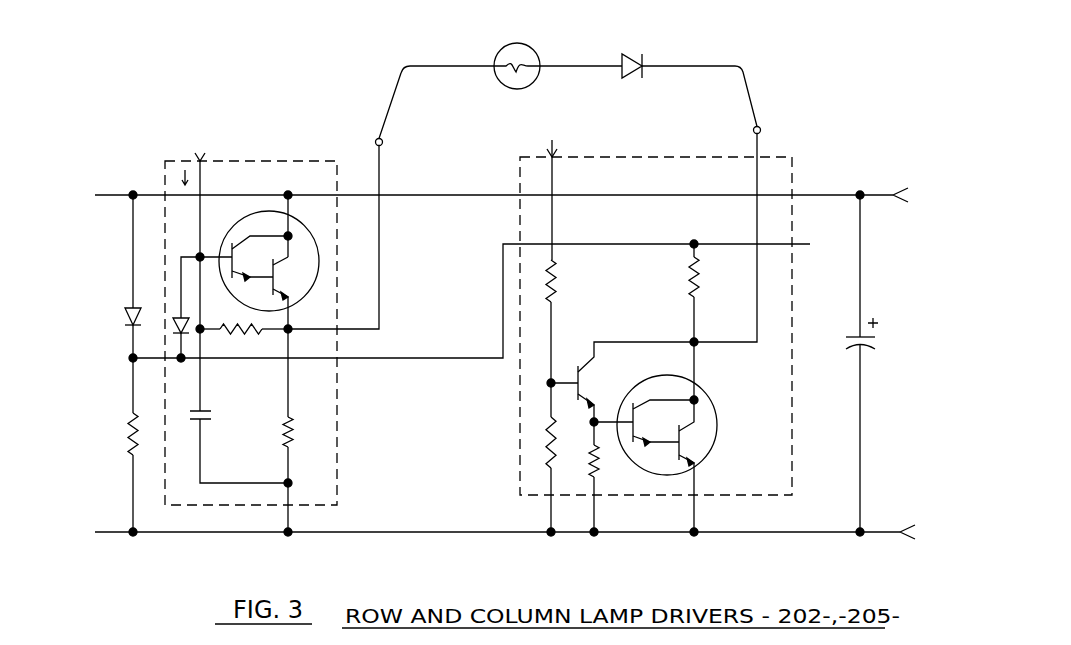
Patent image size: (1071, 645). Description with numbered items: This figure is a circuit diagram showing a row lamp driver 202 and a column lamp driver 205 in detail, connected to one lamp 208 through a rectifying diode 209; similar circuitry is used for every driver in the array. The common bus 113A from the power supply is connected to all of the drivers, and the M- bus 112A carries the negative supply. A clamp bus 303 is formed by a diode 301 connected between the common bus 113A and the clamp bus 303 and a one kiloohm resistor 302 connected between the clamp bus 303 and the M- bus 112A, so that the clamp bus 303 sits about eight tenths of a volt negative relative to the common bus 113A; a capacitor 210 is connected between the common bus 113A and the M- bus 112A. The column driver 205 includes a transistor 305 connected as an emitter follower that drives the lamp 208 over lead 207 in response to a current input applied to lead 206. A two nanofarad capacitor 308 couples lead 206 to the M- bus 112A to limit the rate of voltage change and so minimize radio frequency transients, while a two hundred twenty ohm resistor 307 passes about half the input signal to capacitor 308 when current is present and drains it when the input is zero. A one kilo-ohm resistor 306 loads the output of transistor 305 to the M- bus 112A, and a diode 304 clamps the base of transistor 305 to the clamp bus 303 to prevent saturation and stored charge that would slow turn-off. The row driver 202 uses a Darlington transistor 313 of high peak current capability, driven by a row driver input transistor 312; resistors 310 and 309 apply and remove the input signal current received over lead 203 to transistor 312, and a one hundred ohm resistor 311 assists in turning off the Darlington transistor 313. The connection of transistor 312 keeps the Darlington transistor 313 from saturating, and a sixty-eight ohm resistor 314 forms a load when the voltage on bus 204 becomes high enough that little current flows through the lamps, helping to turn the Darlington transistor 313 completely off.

The M- bus 112A is at (165, 535).
The common bus 113A is at (145, 190).
The row lamp driver 202 is at (792, 168).
The lead 203 is at (549, 155).
The bus 204 is at (760, 128).
The column lamp driver 205 is at (165, 170).
The lead 206 is at (200, 161).
The lead 207 is at (375, 140).
The lamp 208 is at (517, 43).
The rectifying diode 209 is at (634, 54).
The capacitor 210 is at (882, 346).
The diode 301 is at (126, 297).
The resistor 302 is at (127, 440).
The clamp bus 303 is at (145, 358).
The diode 304 is at (177, 317).
The transistor 305 is at (318, 270).
The resistor 306 is at (285, 436).
The resistor 307 is at (240, 336).
The capacitor 308 is at (212, 415).
The resistor 309 is at (553, 292).
The resistor 310 is at (545, 455).
The resistor 311 is at (603, 477).
The row driver input transistor 312 is at (582, 365).
The Darlington transistor 313 is at (705, 413).
The resistor 314 is at (718, 282).